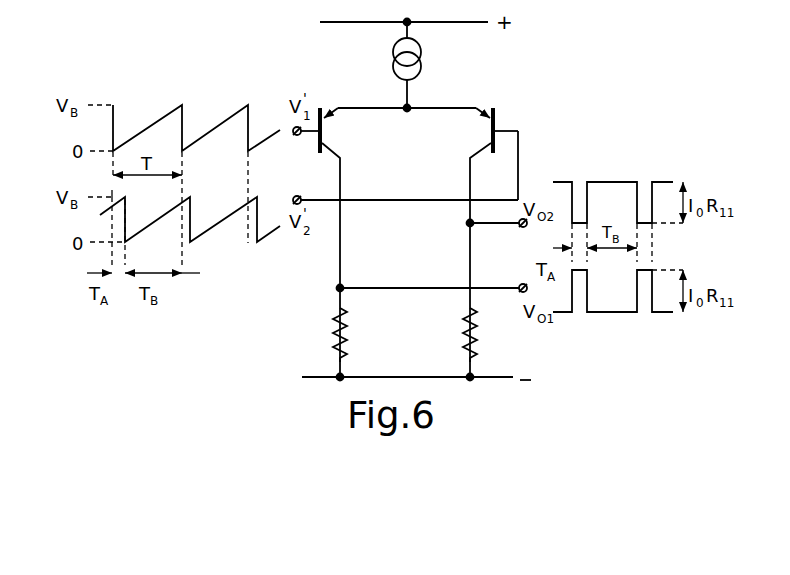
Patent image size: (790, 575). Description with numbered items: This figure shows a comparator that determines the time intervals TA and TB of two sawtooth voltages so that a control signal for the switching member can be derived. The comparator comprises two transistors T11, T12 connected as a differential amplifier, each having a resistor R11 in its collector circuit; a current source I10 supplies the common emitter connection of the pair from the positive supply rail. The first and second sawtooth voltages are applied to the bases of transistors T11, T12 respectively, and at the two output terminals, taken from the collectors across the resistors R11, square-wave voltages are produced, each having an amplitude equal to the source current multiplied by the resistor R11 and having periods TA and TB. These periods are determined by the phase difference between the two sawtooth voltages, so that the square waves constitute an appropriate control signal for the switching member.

The transistor T11 is at (331, 134).
The transistor T12 is at (486, 136).
The resistor R11 is at (345, 327).
The current source I10 is at (428, 43).